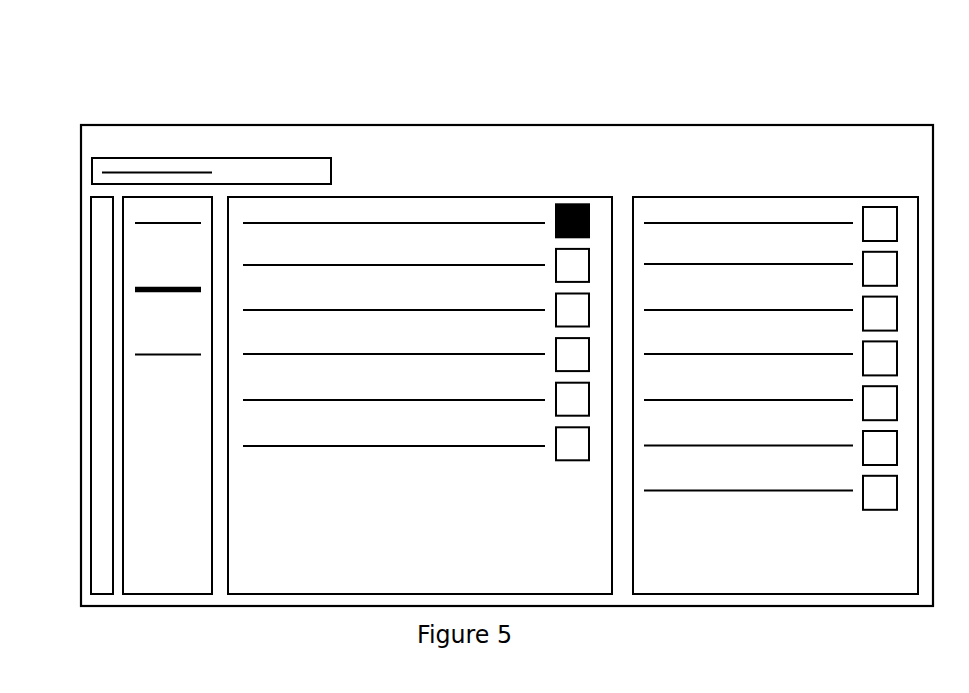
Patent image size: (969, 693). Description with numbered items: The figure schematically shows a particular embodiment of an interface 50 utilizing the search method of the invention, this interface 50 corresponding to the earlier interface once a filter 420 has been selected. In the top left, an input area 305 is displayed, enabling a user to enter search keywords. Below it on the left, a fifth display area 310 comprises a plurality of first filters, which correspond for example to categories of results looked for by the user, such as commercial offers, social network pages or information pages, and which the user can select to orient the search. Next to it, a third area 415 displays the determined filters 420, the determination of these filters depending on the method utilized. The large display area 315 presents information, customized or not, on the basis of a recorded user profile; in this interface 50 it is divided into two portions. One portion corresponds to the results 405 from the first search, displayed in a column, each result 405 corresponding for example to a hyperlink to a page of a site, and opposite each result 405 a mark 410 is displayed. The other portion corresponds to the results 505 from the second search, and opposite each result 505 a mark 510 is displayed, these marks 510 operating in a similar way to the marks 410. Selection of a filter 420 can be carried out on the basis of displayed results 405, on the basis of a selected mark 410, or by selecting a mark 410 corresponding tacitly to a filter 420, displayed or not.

The interface 50 is at (342, 103).
The input area 305 is at (242, 170).
The fifth display area 310 is at (108, 437).
The display area 315 is at (413, 207).
The results 405 is at (480, 223).
The mark 410 is at (587, 203).
The third area 415 is at (143, 213).
The filters 420 is at (178, 222).
The results 505 is at (755, 223).
The mark 510 is at (873, 227).